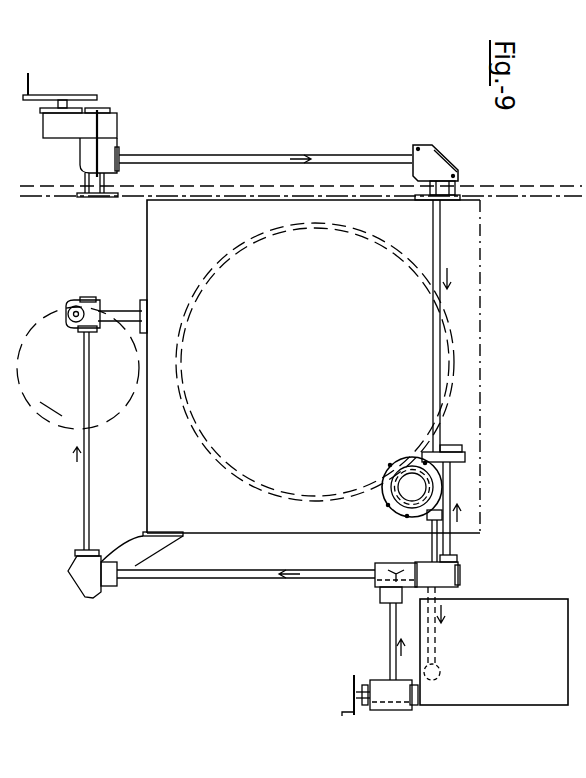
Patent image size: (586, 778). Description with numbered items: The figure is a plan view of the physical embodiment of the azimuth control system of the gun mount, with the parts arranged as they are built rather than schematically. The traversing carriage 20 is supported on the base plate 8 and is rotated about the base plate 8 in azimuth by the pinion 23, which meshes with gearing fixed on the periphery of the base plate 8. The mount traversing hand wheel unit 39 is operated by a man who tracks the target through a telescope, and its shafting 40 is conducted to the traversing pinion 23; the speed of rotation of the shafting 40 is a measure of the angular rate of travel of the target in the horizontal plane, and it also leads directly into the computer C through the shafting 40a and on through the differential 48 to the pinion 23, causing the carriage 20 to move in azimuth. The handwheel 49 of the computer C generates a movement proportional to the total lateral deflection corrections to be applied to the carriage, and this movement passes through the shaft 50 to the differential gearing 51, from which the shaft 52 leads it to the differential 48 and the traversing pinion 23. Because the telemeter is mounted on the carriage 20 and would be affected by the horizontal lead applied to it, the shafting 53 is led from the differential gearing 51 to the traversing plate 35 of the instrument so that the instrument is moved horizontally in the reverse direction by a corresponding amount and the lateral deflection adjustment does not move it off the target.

The base plate 8 is at (313, 366).
The traversing carriage 20 is at (310, 362).
The pinion 23 is at (395, 488).
The traversing plate 35 is at (50, 405).
The mount traversing hand wheel unit 39 is at (77, 93).
The shafting 40 is at (436, 253).
The shafting 40a is at (452, 650).
The differential 48 is at (422, 453).
The handwheel 49 is at (352, 698).
The shaft 50 is at (392, 667).
The differential gearing 51 is at (376, 589).
The shaft 52 is at (450, 473).
The shafting 53 is at (68, 311).
The computer C is at (494, 652).